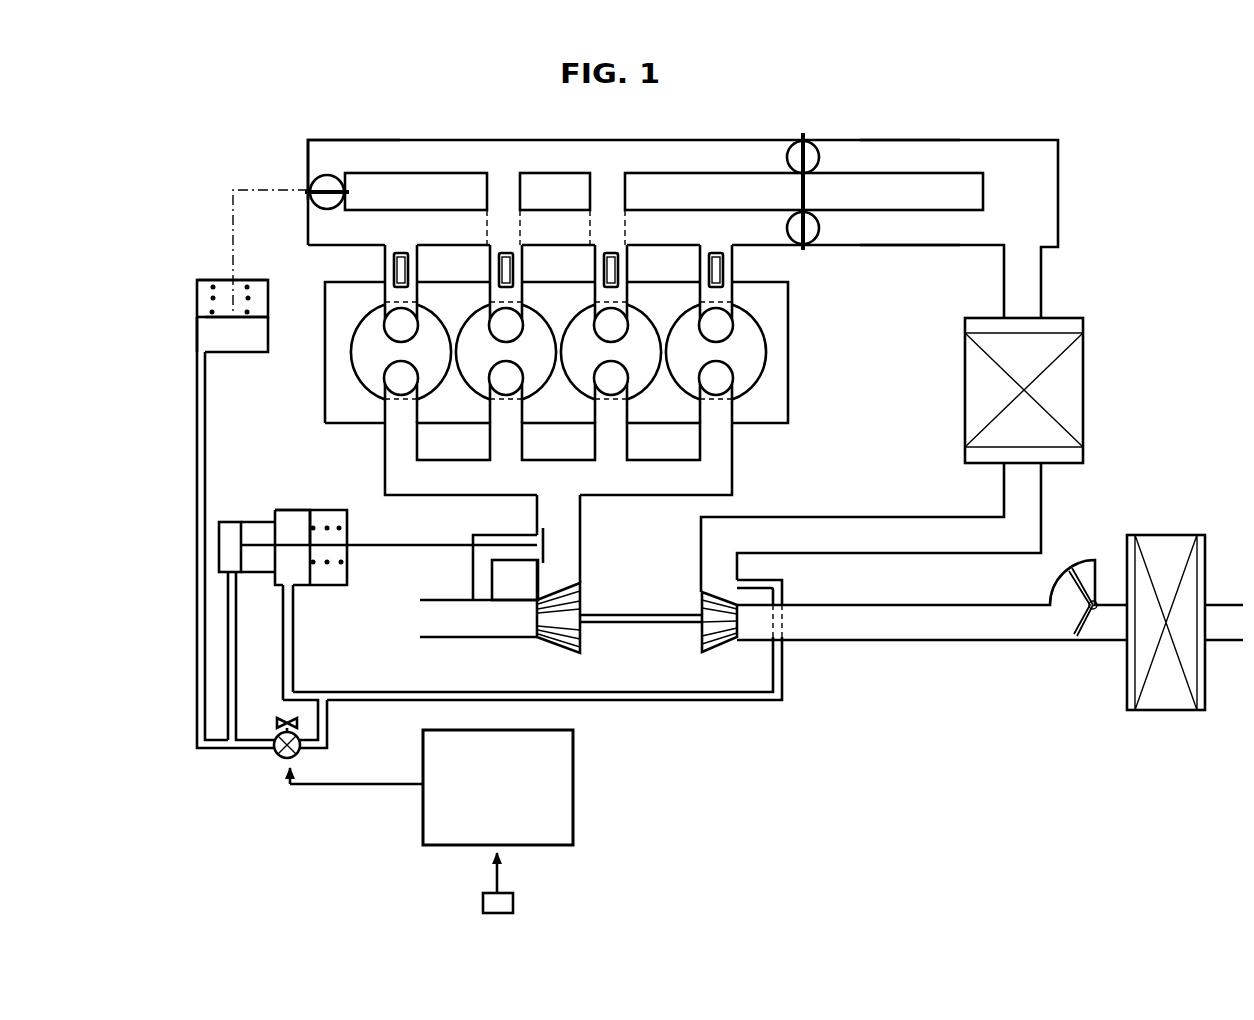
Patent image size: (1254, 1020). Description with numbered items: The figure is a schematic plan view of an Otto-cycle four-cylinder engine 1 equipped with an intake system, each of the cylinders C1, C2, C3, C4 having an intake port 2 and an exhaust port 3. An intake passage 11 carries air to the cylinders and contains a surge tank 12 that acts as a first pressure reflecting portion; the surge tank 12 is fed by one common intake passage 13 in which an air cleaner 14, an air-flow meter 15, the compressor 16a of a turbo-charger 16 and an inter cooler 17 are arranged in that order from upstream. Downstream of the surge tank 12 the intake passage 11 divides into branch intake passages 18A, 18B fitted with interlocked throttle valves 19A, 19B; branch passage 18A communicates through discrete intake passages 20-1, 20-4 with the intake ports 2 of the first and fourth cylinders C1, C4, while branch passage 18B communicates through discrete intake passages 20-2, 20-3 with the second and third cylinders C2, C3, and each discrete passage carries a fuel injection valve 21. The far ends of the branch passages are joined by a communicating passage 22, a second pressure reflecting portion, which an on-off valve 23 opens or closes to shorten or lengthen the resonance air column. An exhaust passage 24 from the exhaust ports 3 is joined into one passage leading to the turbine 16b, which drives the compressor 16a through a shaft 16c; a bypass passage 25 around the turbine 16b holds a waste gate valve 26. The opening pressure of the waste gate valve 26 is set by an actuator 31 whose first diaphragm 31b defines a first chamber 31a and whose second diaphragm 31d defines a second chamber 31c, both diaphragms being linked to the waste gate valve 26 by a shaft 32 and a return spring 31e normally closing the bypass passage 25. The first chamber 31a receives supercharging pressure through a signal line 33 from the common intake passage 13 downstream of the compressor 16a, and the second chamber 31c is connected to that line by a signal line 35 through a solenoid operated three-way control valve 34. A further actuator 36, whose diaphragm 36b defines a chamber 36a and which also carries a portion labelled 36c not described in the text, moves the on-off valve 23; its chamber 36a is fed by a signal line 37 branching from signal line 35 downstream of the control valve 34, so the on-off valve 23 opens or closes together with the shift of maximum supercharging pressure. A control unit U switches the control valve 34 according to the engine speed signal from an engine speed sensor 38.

The engine 1 is at (797, 344).
The intake port 2 is at (408, 328).
The exhaust port 3 is at (388, 385).
The intake passage 11 is at (1088, 232).
The surge tank 12 is at (1045, 173).
The common intake passage 13 is at (872, 517).
The air cleaner 14 is at (1167, 710).
The air-flow meter 15 is at (1067, 630).
The turbo-charger 16 is at (622, 607).
The compressor 16a is at (703, 631).
The turbine 16b is at (563, 641).
The shaft 16c is at (633, 625).
The inter cooler 17 is at (1083, 392).
The branch intake passage 18A is at (910, 247).
The branch intake passage 18B is at (900, 140).
The throttle valve 19A is at (820, 231).
The throttle valve 19B is at (815, 152).
The discrete intake passage 20-1 is at (735, 265).
The discrete intake passage 20-2 is at (628, 265).
The discrete intake passage 20-3 is at (523, 265).
The discrete intake passage 20-4 is at (418, 265).
The fuel injection valve 21 is at (401, 251).
The communicating passage 22 is at (308, 158).
The on-off valve 23 is at (325, 202).
The exhaust passage 24 is at (449, 625).
The bypass passage 25 is at (473, 576).
The waste gate valve 26 is at (546, 538).
The actuator 31 is at (323, 500).
The first chamber 31a is at (293, 518).
The first diaphragm 31b is at (300, 562).
The second chamber 31c is at (228, 532).
The second diaphragm 31d is at (255, 575).
The return spring 31e is at (328, 560).
The shaft 32 is at (408, 545).
The signal line 33 is at (632, 702).
The control valve 34 is at (277, 756).
The signal line 35 is at (235, 707).
The actuator 36 is at (174, 312).
The chamber 36a is at (213, 335).
The diaphragm 36b is at (258, 318).
The port of switching valve 36c is at (199, 293).
The signal line 37 is at (197, 535).
The engine speed sensor 38 is at (513, 908).
The first cylinder C1 is at (763, 370).
The second cylinder C2 is at (663, 441).
The third cylinder C3 is at (558, 441).
The fourth cylinder C4 is at (453, 441).
The control unit U is at (575, 830).